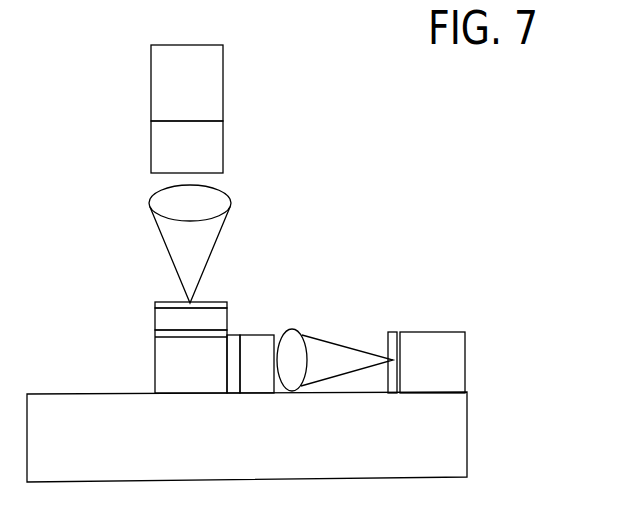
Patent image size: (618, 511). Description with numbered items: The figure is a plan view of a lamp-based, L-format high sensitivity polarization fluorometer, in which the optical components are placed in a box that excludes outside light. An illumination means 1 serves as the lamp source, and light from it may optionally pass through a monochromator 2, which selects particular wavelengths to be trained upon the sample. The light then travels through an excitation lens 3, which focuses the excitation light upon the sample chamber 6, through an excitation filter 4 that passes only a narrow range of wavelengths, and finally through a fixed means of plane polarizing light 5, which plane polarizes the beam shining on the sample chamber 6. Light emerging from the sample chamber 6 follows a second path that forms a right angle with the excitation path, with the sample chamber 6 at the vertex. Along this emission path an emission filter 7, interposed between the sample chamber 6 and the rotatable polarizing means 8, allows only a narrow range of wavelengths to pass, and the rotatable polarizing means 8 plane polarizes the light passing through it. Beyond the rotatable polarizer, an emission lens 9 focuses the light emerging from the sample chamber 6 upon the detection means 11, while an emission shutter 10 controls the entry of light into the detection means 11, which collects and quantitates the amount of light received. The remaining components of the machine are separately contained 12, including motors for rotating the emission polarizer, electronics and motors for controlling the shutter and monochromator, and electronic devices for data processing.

The illumination means 1 is at (187, 83).
The monochromator 2 is at (187, 147).
The excitation lens 3 is at (190, 244).
The excitation filter 4 is at (155, 300).
The fixed means of plane polarizing light 5 is at (155, 320).
The sample chamber 6 is at (191, 361).
The emission filter 7 is at (233, 333).
The rotatable polarizing means 8 is at (257, 333).
The emission lens 9 is at (292, 338).
The emission shutter 10 is at (392, 330).
The detection means 11 is at (432, 362).
The separately contained components 12 is at (247, 437).